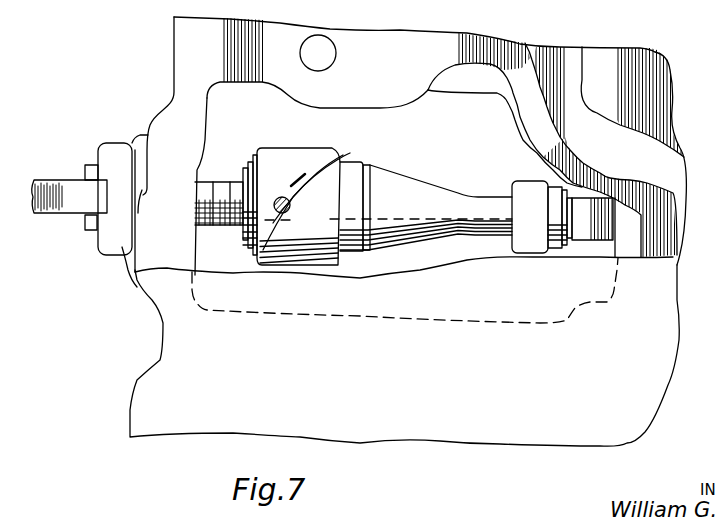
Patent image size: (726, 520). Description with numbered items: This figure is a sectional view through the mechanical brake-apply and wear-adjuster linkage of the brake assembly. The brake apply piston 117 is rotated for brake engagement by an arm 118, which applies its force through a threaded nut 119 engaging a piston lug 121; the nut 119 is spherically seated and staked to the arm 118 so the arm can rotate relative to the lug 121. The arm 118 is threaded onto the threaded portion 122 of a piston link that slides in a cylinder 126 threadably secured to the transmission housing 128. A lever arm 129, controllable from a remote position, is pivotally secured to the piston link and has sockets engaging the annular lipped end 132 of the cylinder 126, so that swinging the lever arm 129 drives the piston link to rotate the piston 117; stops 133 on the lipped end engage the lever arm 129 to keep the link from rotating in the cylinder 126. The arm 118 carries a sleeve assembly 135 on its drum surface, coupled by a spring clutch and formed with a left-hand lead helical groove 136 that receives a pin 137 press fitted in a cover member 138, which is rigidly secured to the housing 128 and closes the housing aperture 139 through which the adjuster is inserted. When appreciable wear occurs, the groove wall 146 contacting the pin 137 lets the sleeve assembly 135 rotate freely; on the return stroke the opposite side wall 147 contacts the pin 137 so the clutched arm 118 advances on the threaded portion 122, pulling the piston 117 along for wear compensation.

The brake apply piston 117 is at (512, 250).
The arm 118 is at (422, 188).
The threaded nut 119 is at (553, 252).
The piston lug 121 is at (515, 182).
The threaded portion 122 is at (213, 183).
The cylinder 126 is at (120, 247).
The transmission housing 128 is at (175, 22).
The lever arm 129 is at (62, 214).
The annular lipped end 132 is at (112, 143).
The stops 133 is at (92, 213).
The sleeve assembly 135 is at (318, 153).
The helical groove 136 is at (303, 185).
The pin 137 is at (278, 197).
The cover member 138 is at (138, 408).
The housing aperture 139 is at (406, 106).
The groove wall 146 is at (307, 190).
The opposite side wall 147 is at (343, 155).